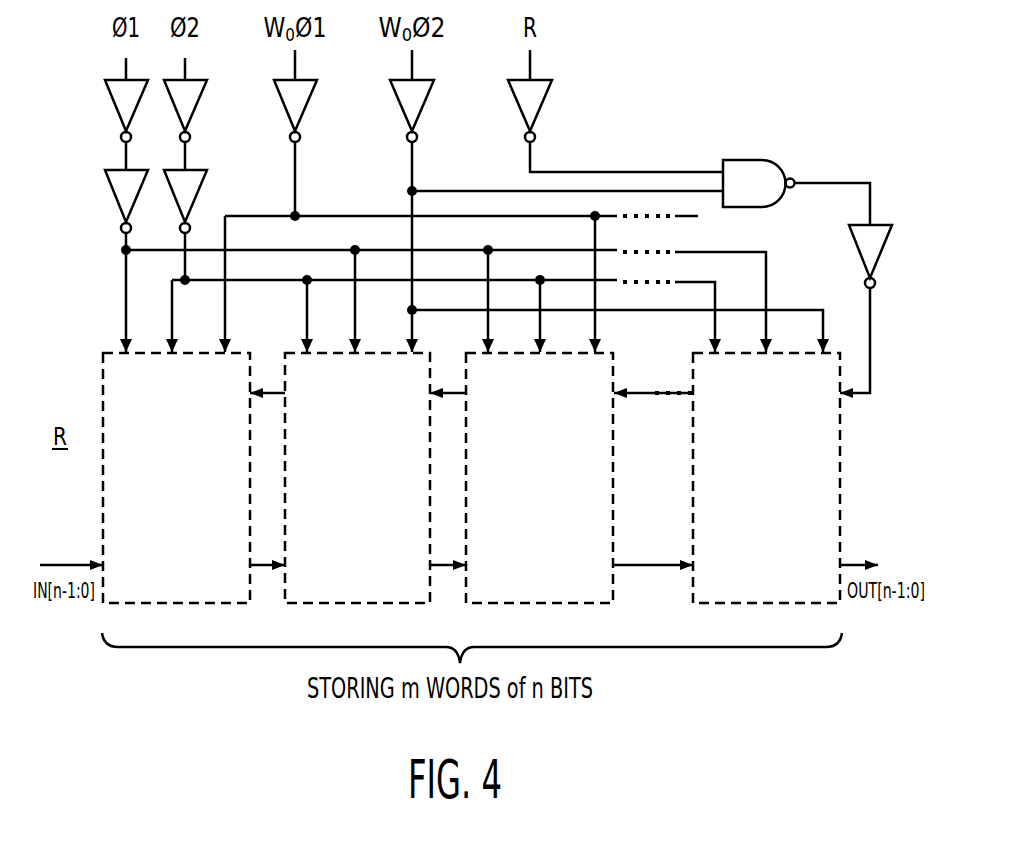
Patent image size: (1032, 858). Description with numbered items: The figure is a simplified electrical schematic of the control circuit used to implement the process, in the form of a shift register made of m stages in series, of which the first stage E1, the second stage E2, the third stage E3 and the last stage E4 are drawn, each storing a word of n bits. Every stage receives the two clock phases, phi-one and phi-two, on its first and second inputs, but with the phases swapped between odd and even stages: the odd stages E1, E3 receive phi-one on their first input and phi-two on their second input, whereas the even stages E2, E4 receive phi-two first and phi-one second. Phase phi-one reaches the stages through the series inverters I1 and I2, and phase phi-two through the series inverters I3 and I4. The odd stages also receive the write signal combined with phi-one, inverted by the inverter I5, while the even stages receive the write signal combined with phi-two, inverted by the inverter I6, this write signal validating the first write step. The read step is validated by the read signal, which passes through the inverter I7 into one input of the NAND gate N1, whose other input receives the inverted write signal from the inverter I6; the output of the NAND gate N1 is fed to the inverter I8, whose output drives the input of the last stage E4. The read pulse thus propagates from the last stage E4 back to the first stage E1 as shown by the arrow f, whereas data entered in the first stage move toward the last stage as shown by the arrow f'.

The inverter I1 is at (122, 192).
The inverter I2 is at (122, 100).
The inverter I3 is at (188, 108).
The inverter I4 is at (188, 188).
The inverter I5 is at (298, 103).
The inverter I6 is at (417, 103).
The inverter I7 is at (537, 103).
The inverter I8 is at (866, 257).
The NAND gate N1 is at (745, 172).
The first stage E1 is at (176, 478).
The second stage E2 is at (357, 478).
The third stage E3 is at (539, 478).
The last stage E4 is at (766, 478).
The arrow f is at (651, 370).
The arrow f' is at (654, 542).